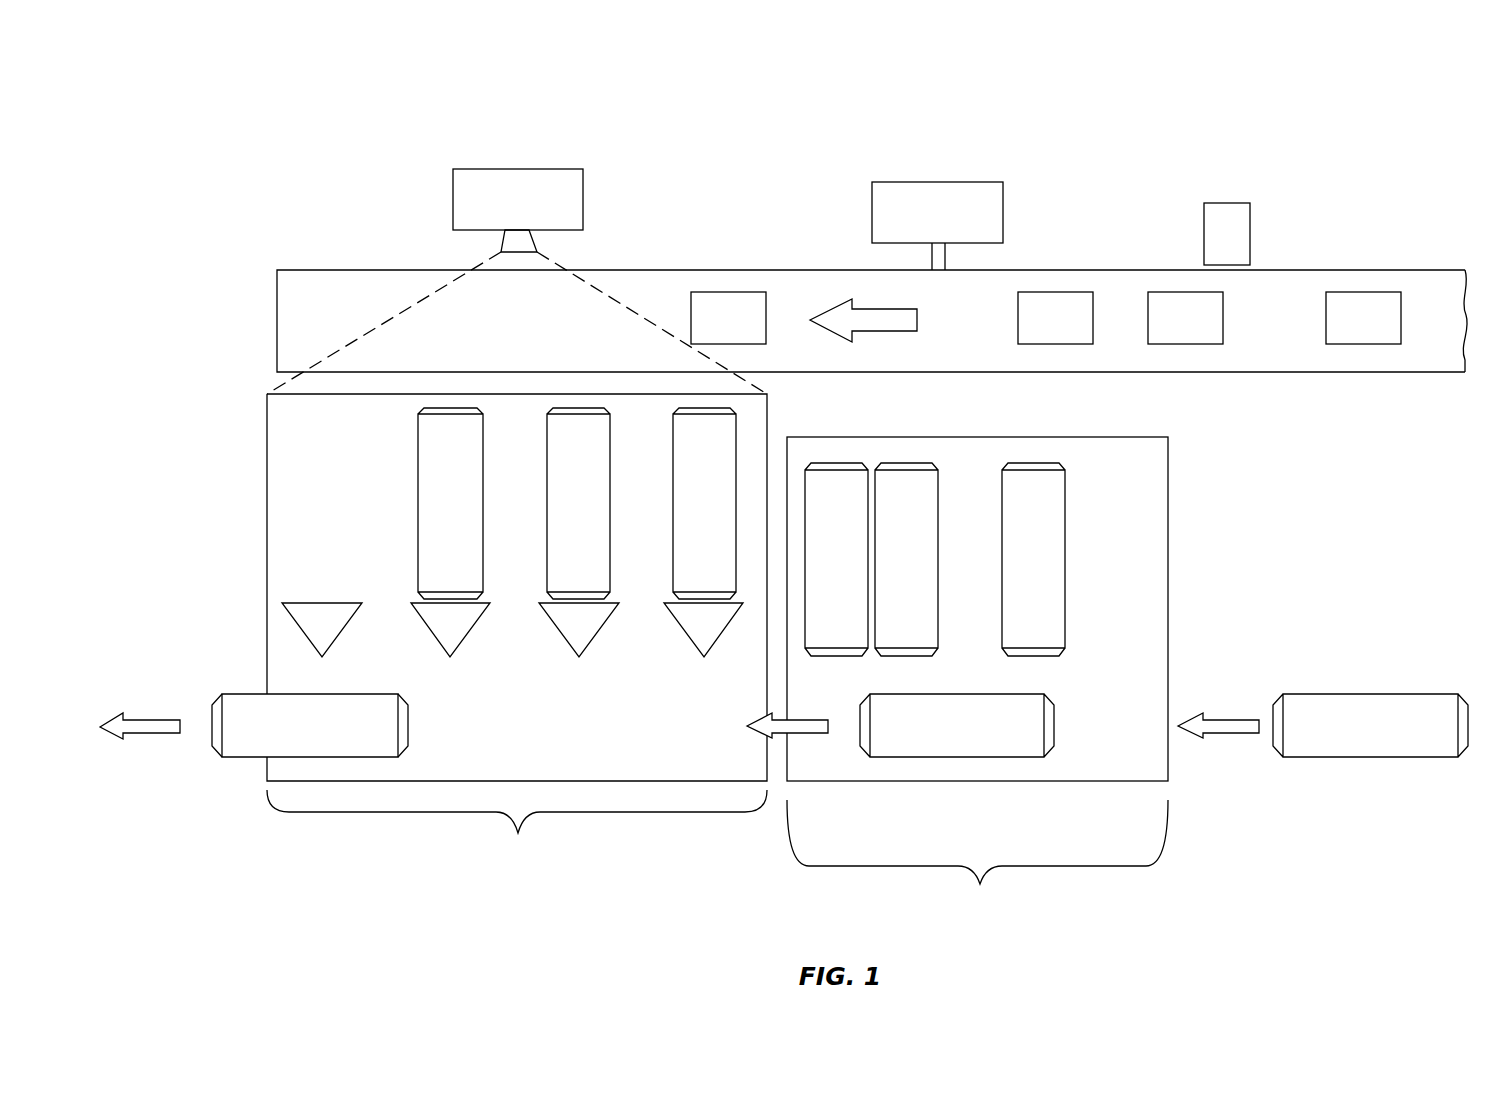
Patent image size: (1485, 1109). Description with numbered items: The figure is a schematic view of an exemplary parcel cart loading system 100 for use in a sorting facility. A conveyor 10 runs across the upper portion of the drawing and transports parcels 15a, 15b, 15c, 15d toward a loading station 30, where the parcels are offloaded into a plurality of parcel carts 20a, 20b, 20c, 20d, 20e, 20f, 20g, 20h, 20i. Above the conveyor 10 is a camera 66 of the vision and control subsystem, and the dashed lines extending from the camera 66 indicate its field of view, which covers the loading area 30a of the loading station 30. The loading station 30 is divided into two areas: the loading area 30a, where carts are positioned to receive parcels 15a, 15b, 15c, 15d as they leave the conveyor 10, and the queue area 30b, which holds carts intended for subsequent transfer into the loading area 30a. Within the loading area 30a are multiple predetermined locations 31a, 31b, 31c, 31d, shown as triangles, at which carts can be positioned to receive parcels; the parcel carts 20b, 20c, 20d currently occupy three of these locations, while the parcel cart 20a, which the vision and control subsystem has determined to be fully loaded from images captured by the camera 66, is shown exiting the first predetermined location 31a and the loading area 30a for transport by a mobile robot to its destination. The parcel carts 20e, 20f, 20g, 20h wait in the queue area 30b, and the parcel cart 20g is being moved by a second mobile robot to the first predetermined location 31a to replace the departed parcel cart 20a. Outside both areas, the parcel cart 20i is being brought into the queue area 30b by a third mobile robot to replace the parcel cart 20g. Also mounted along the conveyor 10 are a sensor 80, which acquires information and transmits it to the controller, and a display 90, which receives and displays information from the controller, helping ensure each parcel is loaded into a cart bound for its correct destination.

The parcel cart loading system 100 is at (175, 142).
The conveyor 10 is at (1370, 270).
The parcel 15a is at (727, 292).
The parcel 15b is at (1063, 292).
The parcel 15c is at (1165, 292).
The parcel 15d is at (1349, 292).
The camera 66 is at (453, 190).
The display 90 is at (955, 182).
The sensor 80 is at (1232, 203).
The loading station 30 is at (190, 493).
The loading area 30a is at (517, 629).
The queue area 30b is at (977, 677).
The parcel cart 20a is at (238, 694).
The parcel cart 20b is at (418, 472).
The parcel cart 20c is at (547, 490).
The parcel cart 20d is at (673, 488).
The parcel cart 20e is at (840, 463).
The parcel cart 20f is at (908, 463).
The parcel cart 20g is at (968, 757).
The parcel cart 20h is at (1040, 463).
The parcel cart 20i is at (1348, 694).
The first predetermined location 31a is at (293, 603).
The predetermined location 31b is at (437, 643).
The predetermined location 31c is at (567, 645).
The predetermined location 31d is at (695, 645).